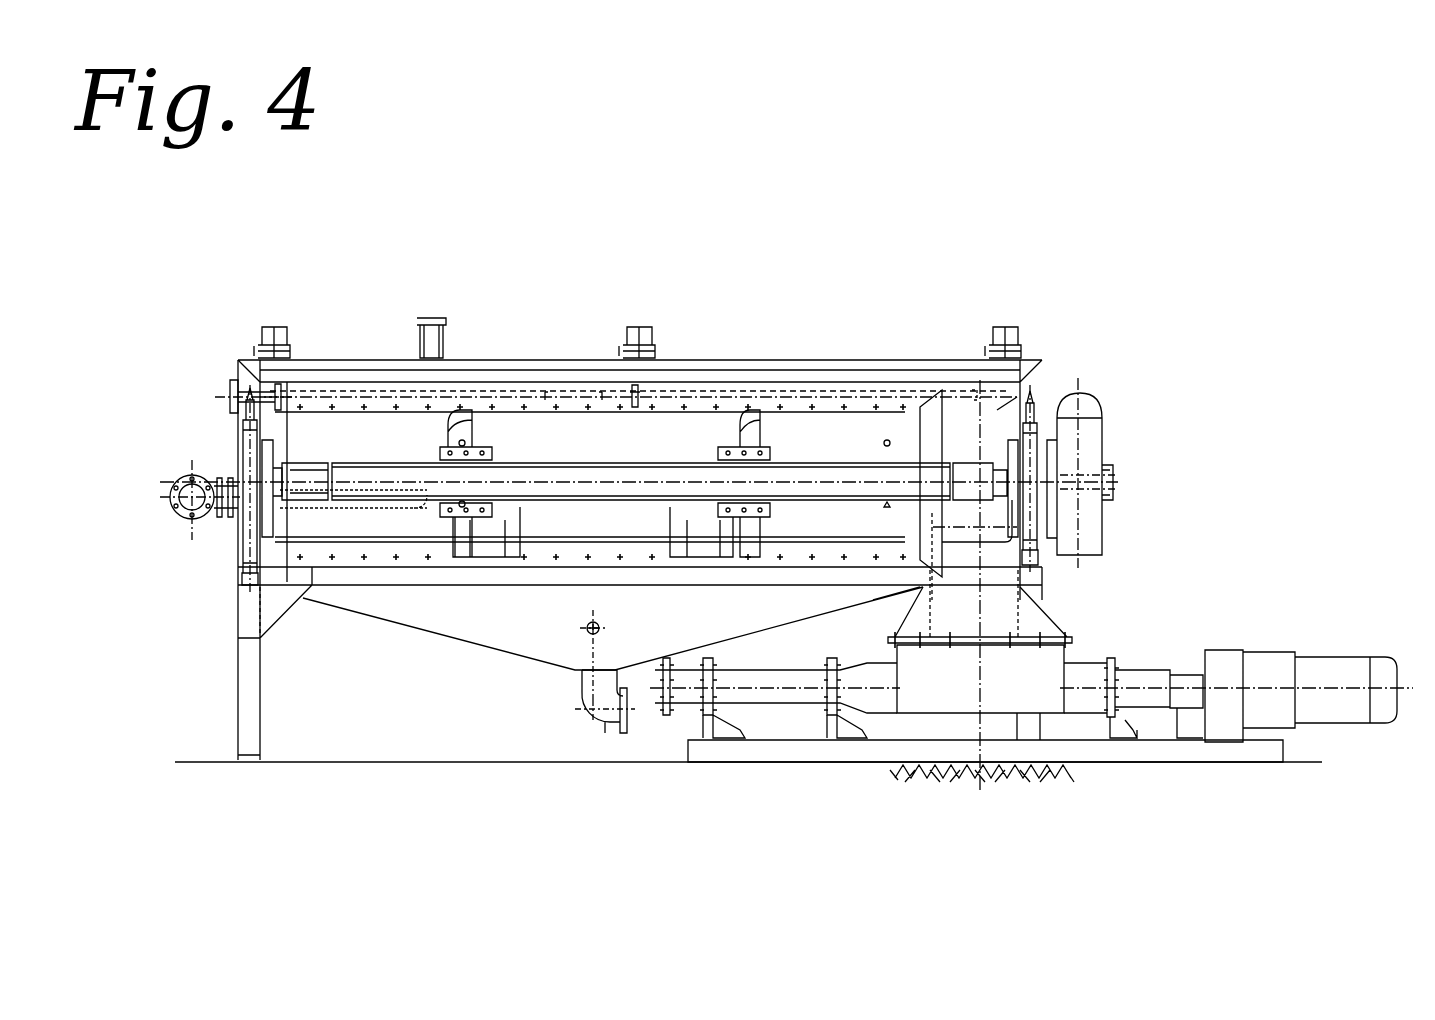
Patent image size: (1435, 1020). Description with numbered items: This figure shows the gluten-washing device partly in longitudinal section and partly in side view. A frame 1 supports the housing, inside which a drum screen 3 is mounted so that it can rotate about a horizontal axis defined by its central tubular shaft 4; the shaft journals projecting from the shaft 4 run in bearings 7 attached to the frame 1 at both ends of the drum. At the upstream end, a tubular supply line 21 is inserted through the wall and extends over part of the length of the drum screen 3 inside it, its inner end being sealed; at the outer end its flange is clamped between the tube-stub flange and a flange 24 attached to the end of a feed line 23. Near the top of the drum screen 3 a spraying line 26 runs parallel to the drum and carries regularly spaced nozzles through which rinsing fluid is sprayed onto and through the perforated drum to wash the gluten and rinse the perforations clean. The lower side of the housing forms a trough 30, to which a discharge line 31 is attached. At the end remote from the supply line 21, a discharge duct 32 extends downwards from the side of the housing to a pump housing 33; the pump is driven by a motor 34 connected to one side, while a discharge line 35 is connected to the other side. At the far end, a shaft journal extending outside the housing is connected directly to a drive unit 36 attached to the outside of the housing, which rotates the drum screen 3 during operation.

The frame 1 is at (245, 683).
The drum screen 3 is at (817, 400).
The central tubular shaft 4 is at (533, 472).
The bearing 7 is at (246, 487).
The supply line 21 is at (345, 480).
The feed line 23 is at (186, 478).
The flange 24 is at (222, 517).
The spraying line 26 is at (232, 392).
The trough 30 is at (506, 625).
The discharge line 31 is at (604, 710).
The discharge duct 32 is at (1000, 620).
The pump housing 33 is at (938, 675).
The motor 34 is at (1345, 670).
The discharge line 35 is at (760, 698).
The drive unit 36 is at (1085, 445).